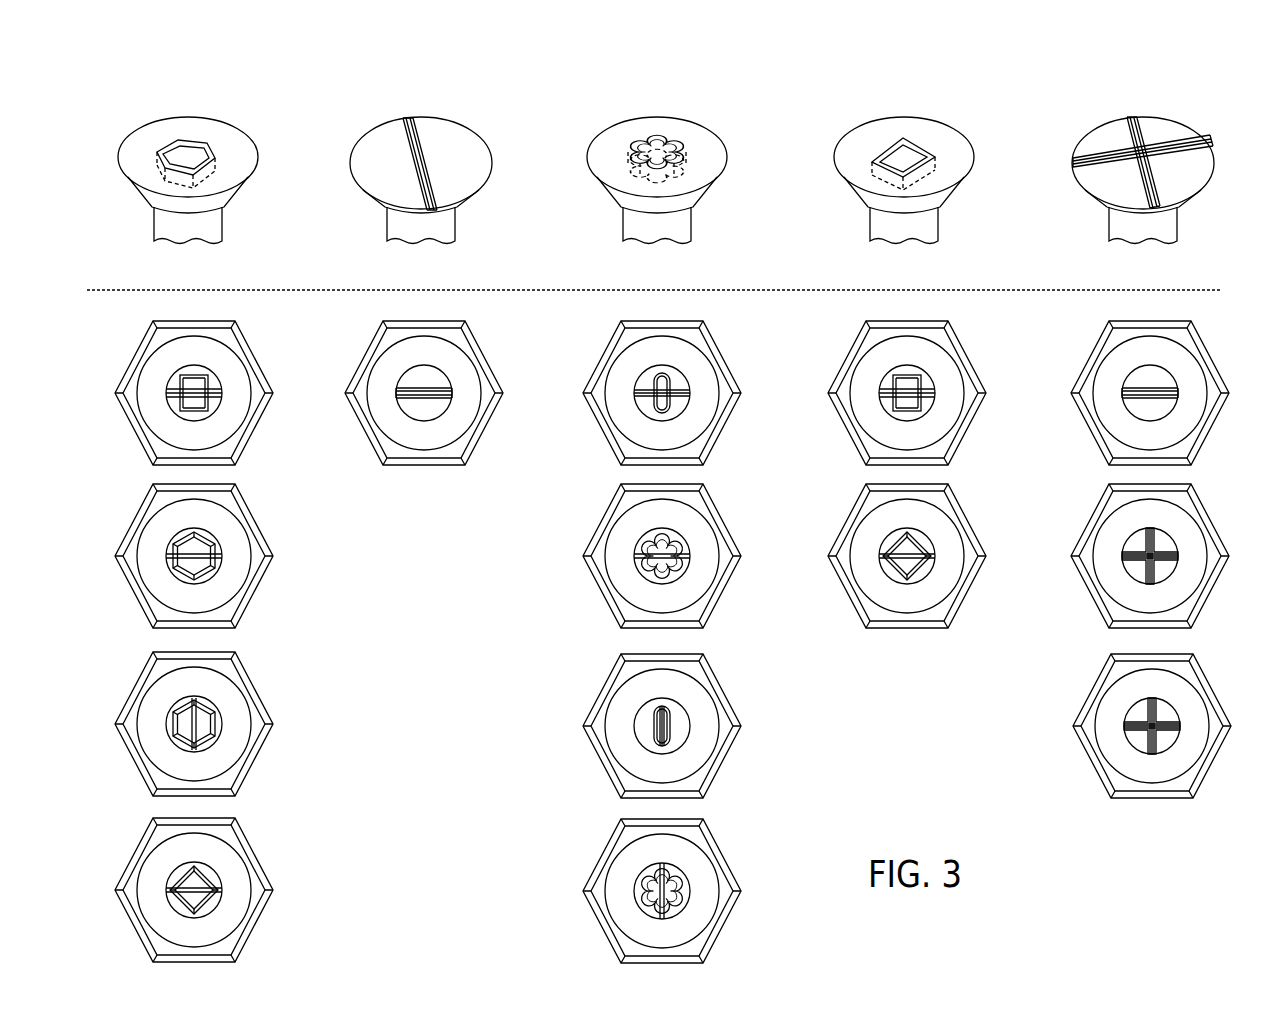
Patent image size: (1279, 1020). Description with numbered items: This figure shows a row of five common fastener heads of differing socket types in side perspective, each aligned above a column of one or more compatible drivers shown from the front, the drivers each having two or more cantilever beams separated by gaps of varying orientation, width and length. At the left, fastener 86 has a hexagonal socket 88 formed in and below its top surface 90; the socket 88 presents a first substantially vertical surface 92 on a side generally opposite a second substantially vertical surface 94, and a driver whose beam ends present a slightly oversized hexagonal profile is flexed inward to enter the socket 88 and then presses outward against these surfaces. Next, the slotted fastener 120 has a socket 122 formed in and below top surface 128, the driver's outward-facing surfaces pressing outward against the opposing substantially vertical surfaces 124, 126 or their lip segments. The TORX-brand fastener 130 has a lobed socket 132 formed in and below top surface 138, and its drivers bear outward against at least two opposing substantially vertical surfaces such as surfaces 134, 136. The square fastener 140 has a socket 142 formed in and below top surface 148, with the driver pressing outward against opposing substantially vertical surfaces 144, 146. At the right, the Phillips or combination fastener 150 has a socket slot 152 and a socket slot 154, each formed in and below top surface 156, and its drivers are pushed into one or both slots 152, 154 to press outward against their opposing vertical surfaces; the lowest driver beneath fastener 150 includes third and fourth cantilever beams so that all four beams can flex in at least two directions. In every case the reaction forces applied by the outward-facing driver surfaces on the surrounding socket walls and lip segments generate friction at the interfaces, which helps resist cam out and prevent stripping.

The fastener 86 is at (160, 145).
The hexagonal socket 88 is at (170, 150).
The top surface 90 is at (133, 162).
The first substantially vertical surface 92 is at (172, 195).
The second substantially vertical surface 94 is at (197, 145).
The slotted fastener 120 is at (421, 147).
The socket 122 is at (432, 196).
The substantially vertical surface 124 is at (410, 145).
The substantially vertical surface 126 is at (413, 122).
The top surface 128 is at (467, 152).
The TORX-brand fastener 130 is at (647, 148).
The socket 132 is at (673, 148).
The substantially vertical surface 134 is at (668, 198).
The substantially vertical surface 136 is at (648, 140).
The top surface 138 is at (610, 160).
The square fastener 140 is at (877, 147).
The socket 142 is at (893, 158).
The substantially vertical surface 144 is at (863, 185).
The substantially vertical surface 146 is at (920, 152).
The top surface 148 is at (848, 168).
The Phillips or combination fastener 150 is at (1141, 142).
The socket slot 152 is at (1094, 160).
The socket slot 154 is at (1135, 128).
The top surface 156 is at (1183, 134).